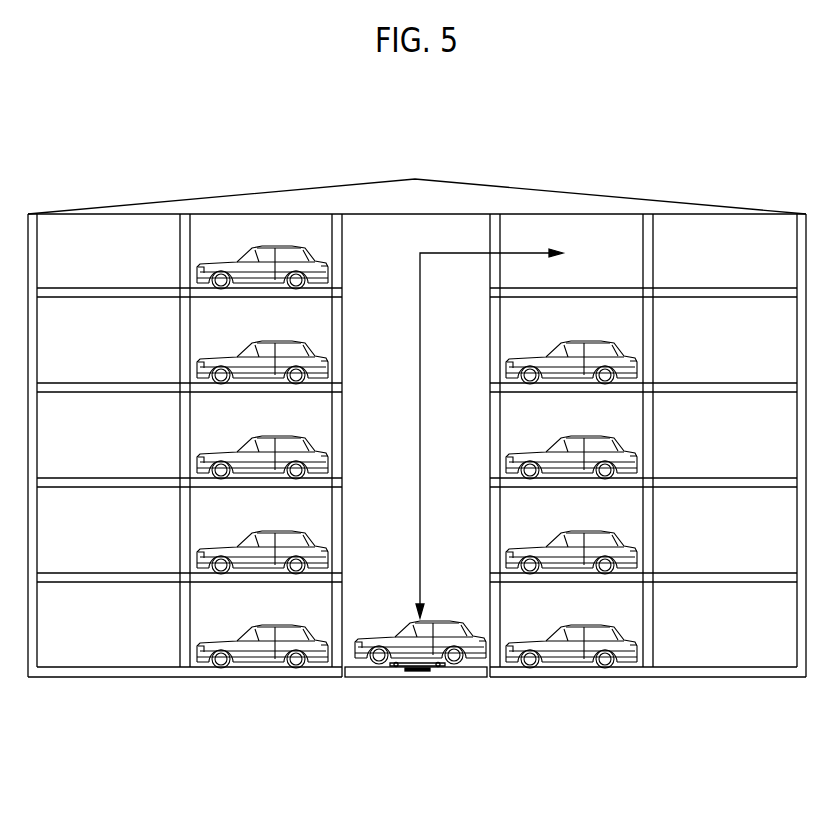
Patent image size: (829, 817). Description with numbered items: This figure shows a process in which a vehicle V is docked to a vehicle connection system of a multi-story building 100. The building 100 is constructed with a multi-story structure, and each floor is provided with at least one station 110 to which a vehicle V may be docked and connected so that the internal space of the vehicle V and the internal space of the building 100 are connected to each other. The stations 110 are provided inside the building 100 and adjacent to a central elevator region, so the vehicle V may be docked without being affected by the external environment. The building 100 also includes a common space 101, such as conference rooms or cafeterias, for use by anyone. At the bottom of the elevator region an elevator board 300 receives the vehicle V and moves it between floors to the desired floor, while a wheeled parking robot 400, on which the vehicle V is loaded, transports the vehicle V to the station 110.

The building 100 is at (655, 183).
The common space 101 is at (731, 253).
The station 110 is at (598, 293).
The elevator board 300 is at (369, 678).
The parking robot 400 is at (431, 672).
The vehicle V is at (550, 655).